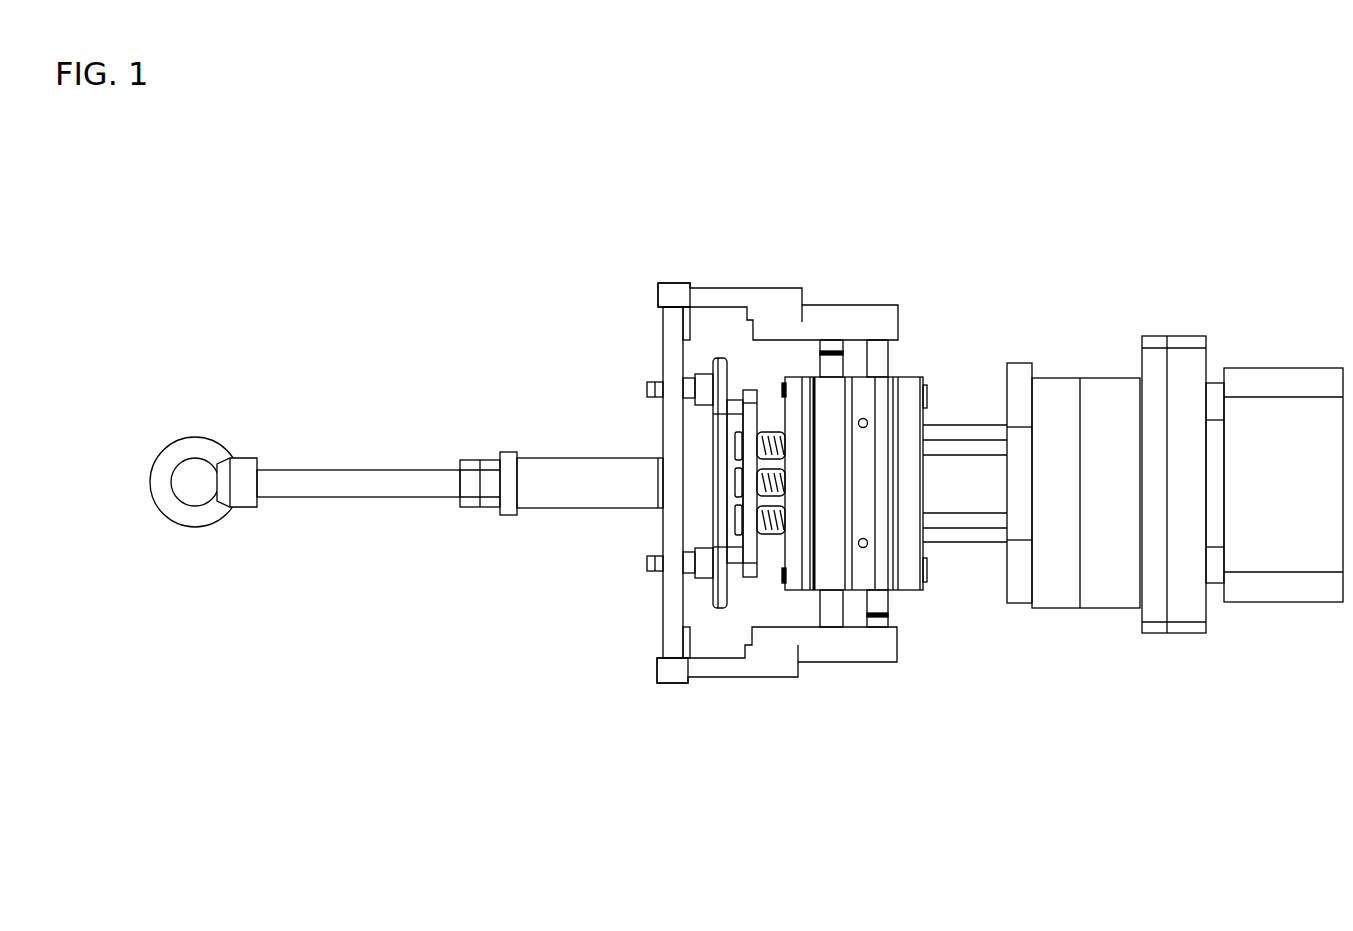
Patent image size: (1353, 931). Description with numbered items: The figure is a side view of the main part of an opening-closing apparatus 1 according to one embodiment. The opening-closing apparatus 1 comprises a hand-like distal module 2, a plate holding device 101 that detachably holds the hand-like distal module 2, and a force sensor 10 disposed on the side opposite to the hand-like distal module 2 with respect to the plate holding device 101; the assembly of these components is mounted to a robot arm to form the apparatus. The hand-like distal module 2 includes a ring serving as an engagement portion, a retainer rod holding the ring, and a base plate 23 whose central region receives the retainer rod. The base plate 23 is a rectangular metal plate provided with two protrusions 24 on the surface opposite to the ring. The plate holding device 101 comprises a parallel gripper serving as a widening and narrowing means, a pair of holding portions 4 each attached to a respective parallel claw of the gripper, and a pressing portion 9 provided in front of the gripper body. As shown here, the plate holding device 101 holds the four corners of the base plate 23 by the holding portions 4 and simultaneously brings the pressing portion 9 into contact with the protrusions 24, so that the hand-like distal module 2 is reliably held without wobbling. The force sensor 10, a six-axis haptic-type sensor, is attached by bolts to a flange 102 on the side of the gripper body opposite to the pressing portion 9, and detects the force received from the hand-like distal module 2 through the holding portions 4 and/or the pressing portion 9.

The opening-closing apparatus 1 is at (837, 252).
The hand-like distal module 2 is at (358, 456).
The holding portions 4 is at (672, 290).
The pressing portion 9 is at (706, 515).
The force sensor 10 is at (1315, 378).
The base plate 23 is at (673, 336).
The protrusions 24 is at (706, 400).
The plate holding device 101 is at (713, 276).
The flange 102 is at (1183, 335).